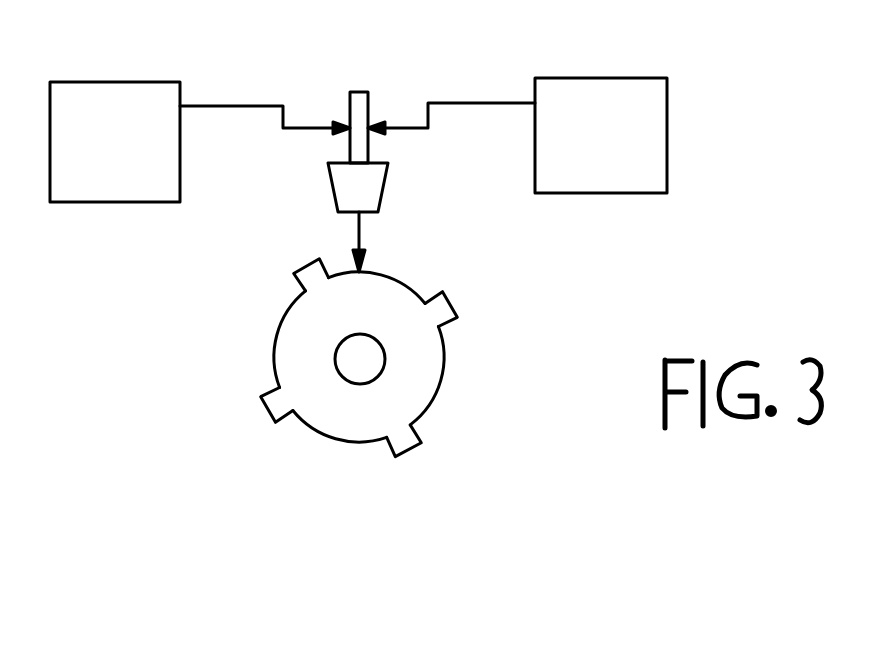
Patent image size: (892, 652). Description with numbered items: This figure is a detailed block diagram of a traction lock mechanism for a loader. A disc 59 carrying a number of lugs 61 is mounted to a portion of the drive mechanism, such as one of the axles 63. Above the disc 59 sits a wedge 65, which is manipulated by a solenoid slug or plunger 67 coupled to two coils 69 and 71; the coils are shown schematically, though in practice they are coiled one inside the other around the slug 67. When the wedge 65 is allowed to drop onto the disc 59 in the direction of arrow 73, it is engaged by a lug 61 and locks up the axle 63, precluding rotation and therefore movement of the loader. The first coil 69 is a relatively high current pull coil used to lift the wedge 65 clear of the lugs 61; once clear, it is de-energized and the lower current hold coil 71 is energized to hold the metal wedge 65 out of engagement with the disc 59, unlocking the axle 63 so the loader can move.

The disc 59 is at (290, 322).
The lugs 61 is at (318, 262).
The axle 63 is at (462, 357).
The wedge 65 is at (263, 164).
The solenoid slug or plunger 67 is at (393, 47).
The first coil 69 is at (123, 45).
The second coil 71 is at (660, 43).
The arrow 73 is at (405, 205).